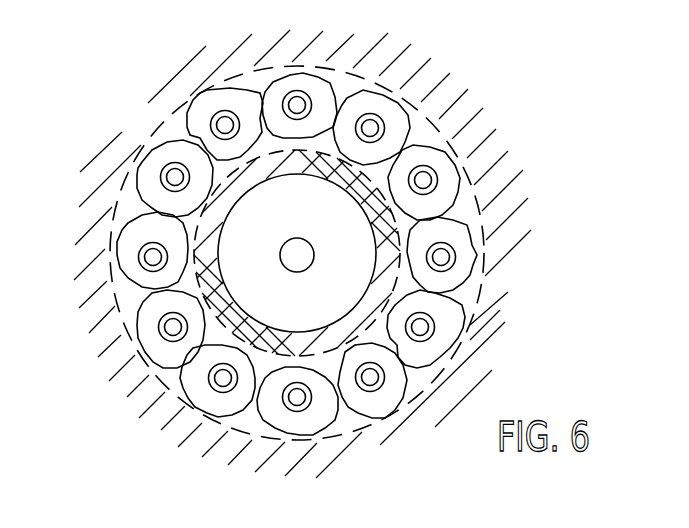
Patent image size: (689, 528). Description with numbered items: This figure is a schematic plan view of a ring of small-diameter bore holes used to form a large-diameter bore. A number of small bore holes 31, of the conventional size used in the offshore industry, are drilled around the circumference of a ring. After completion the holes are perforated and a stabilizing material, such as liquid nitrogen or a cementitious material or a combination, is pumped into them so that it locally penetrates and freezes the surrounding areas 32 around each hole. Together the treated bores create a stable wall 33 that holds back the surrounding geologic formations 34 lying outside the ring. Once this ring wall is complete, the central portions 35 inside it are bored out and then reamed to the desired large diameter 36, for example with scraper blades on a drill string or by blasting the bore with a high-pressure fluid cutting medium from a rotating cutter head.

The small bore holes 31 is at (362, 118).
The surrounding areas 32 is at (437, 235).
The stable wall 33 is at (476, 306).
The surrounding geologic formations 34 is at (287, 253).
The central portions 35 is at (298, 263).
The large diameter 36 is at (220, 271).